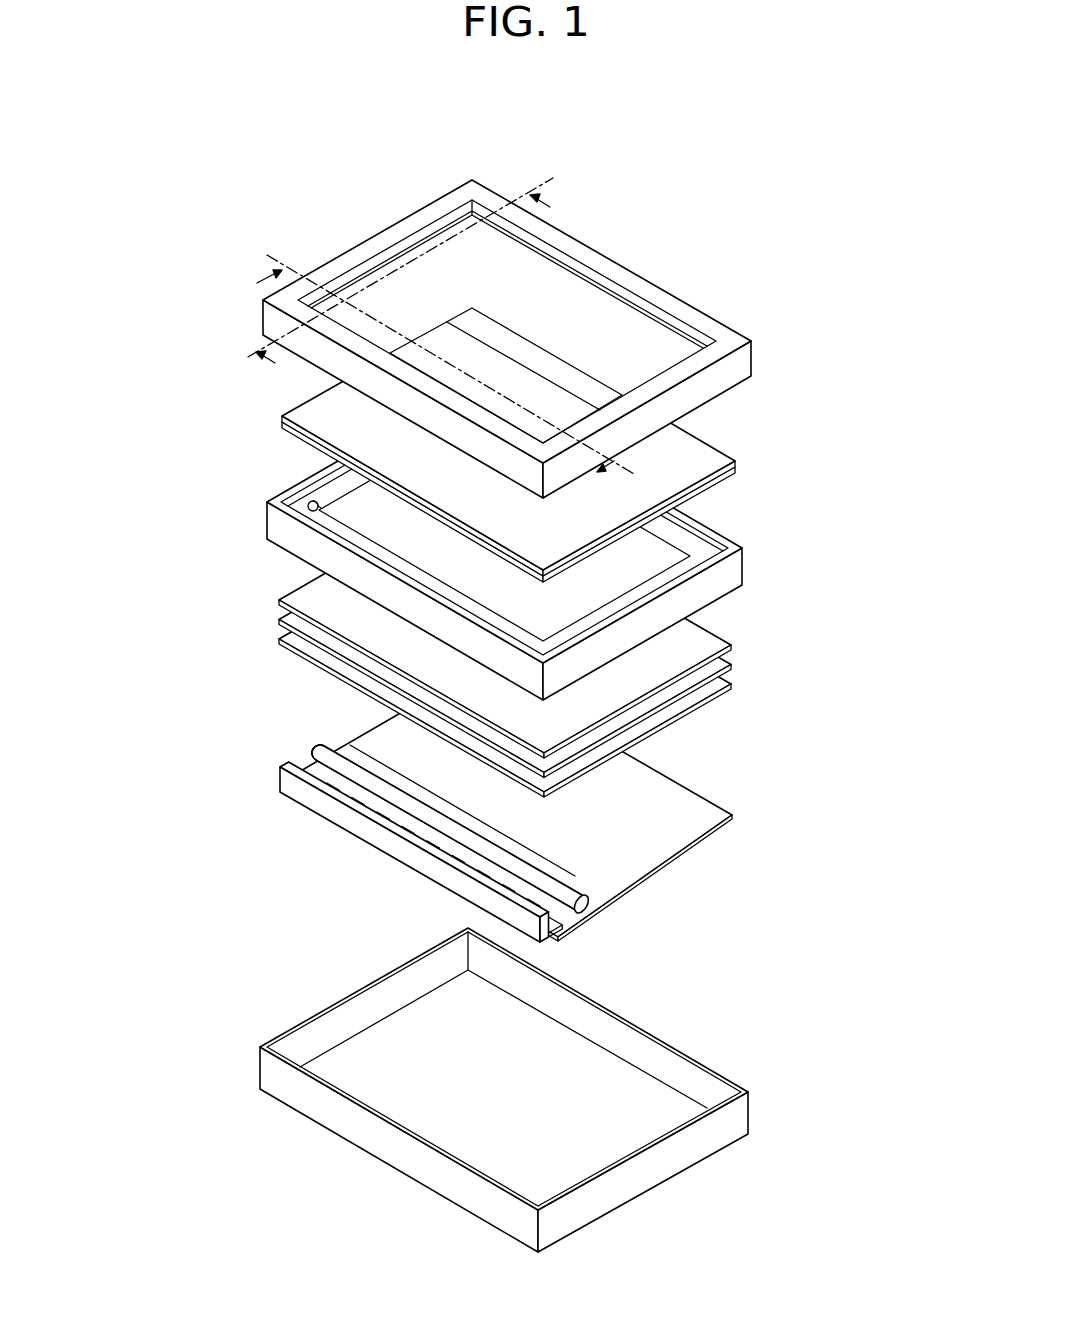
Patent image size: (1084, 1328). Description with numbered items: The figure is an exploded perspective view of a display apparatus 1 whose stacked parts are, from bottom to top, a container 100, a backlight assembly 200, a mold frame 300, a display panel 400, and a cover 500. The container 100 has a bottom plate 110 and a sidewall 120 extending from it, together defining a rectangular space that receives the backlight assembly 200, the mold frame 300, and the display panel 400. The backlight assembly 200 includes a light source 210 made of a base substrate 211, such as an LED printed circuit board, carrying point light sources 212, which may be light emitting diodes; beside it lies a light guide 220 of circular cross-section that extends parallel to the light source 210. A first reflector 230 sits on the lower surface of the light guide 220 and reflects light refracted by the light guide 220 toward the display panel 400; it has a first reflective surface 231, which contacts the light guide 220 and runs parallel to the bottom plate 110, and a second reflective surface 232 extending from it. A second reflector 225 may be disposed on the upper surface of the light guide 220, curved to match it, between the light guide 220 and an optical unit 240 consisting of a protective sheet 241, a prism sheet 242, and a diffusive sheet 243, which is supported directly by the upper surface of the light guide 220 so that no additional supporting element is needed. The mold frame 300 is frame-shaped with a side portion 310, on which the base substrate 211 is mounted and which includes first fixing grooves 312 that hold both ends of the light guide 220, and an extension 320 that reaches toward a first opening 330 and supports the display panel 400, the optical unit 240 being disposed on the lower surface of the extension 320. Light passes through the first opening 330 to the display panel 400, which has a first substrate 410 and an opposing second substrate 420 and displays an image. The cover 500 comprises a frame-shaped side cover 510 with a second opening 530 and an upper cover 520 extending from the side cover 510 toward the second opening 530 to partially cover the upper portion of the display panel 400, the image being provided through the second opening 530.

The display apparatus 1 is at (554, 692).
The container 100 is at (559, 1090).
The bottom plate 110 is at (658, 1110).
The sidewall 120 is at (652, 1165).
The backlight assembly 200 is at (594, 742).
The light source 210 is at (567, 877).
The base substrate 211 is at (544, 948).
The point light sources 212 is at (545, 941).
The light guide 220 is at (570, 804).
The second reflector 225 is at (563, 890).
The first reflector 230 is at (583, 838).
The first reflective surface 231 is at (571, 933).
The second reflective surface 232 is at (628, 896).
The optical unit 240 is at (569, 644).
The protective sheet 241 is at (731, 644).
The prism sheet 242 is at (731, 664).
The diffusive sheet 243 is at (731, 684).
The mold frame 300 is at (535, 543).
The side portion 310 is at (710, 547).
The first fixing grooves 312 is at (310, 505).
The extension 320 is at (713, 555).
The first opening 330 is at (668, 569).
The display panel 400 is at (576, 444).
The first substrate 410 is at (713, 460).
The second substrate 420 is at (673, 470).
The cover 500 is at (554, 340).
The side cover 510 is at (749, 360).
The upper cover 520 is at (647, 292).
The second opening 530 is at (657, 334).